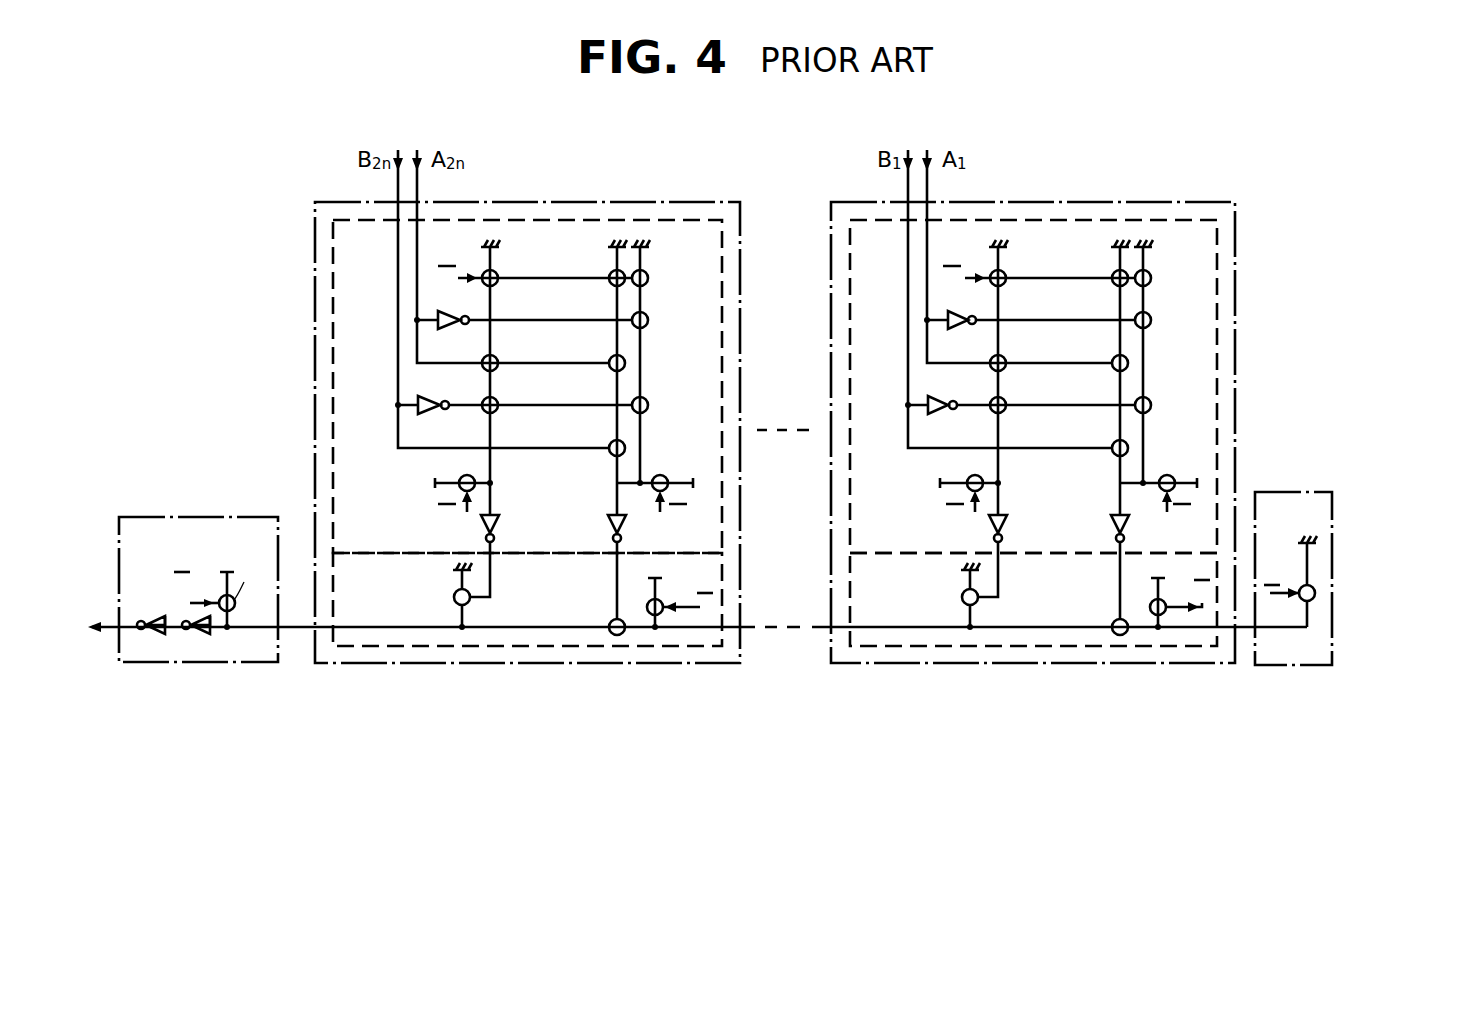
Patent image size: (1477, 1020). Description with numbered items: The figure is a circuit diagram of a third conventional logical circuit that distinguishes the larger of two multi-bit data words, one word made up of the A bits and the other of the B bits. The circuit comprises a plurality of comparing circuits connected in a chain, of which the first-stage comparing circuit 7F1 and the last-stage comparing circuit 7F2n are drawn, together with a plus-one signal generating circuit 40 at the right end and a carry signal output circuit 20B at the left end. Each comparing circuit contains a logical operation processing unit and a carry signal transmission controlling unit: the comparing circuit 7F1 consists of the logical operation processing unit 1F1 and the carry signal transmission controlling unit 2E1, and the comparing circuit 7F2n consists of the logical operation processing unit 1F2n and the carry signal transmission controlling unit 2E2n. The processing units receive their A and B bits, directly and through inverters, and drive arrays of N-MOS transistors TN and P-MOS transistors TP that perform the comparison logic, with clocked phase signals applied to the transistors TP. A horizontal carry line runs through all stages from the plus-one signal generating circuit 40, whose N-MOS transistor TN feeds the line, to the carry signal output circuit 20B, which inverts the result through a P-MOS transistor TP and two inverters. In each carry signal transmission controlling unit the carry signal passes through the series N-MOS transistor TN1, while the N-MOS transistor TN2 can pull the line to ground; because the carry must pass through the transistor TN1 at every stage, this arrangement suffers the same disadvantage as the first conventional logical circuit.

The carry signal output circuit 20B is at (190, 517).
The comparing circuit 7F2n is at (523, 202).
The logical operation processing unit 1F2n is at (593, 227).
The carry signal transmission controlling unit 2E2n is at (542, 646).
The comparing circuit 7F1 is at (1048, 202).
The logical operation processing unit 1F1 is at (1213, 280).
The carry signal transmission controlling unit 2E1 is at (958, 646).
The +1 signal generating circuit 40 is at (1275, 492).
The N-MOS transistor TN is at (498, 278).
The P-MOS transistor TP is at (460, 479).
The N-MOS transistor TN1 is at (854, 616).
The N-MOS transistor TN2 is at (695, 598).